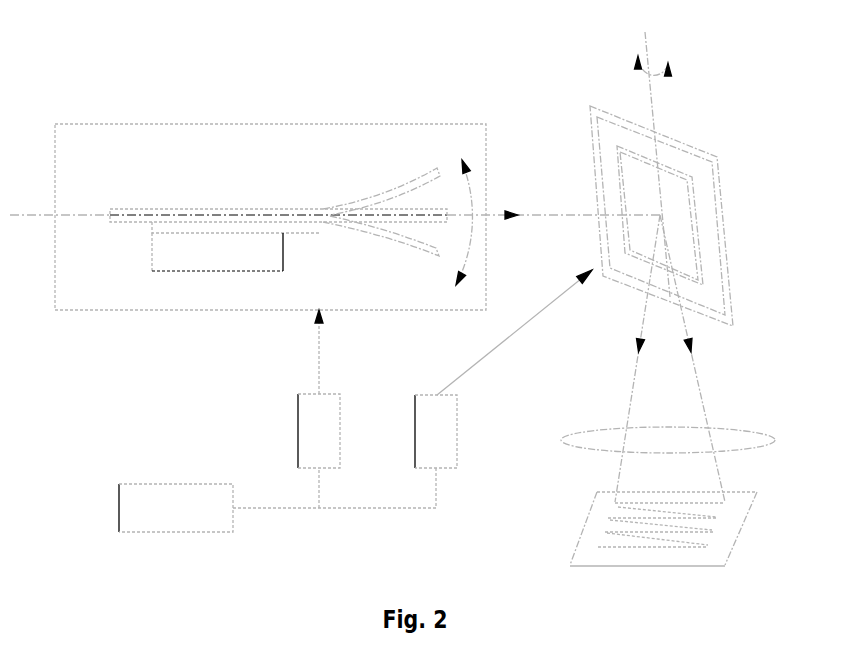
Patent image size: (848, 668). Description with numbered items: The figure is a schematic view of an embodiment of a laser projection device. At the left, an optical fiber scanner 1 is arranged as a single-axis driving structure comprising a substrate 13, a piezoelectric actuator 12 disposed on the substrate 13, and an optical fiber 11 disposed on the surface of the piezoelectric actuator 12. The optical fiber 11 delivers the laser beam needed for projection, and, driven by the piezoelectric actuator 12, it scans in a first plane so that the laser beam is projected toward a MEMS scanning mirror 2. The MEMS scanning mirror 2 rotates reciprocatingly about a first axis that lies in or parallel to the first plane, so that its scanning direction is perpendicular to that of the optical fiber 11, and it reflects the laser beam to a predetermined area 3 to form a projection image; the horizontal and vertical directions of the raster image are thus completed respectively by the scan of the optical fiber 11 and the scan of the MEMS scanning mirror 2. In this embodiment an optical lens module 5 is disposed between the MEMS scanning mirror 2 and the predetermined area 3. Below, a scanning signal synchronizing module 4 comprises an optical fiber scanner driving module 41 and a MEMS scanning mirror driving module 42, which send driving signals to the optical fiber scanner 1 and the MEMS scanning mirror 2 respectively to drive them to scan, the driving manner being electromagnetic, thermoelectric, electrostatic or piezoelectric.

The optical fiber scanner 1 is at (207, 132).
The optical fiber 11 is at (288, 209).
The piezoelectric actuator 12 is at (305, 228).
The substrate 13 is at (235, 258).
The MEMS scanning mirror 2 is at (685, 147).
The predetermined area 3 is at (733, 505).
The scanning signal synchronizing module 4 is at (150, 482).
The optical fiber scanner driving module 41 is at (338, 405).
The MEMS scanning mirror driving module 42 is at (457, 423).
The optical lens module 5 is at (735, 432).